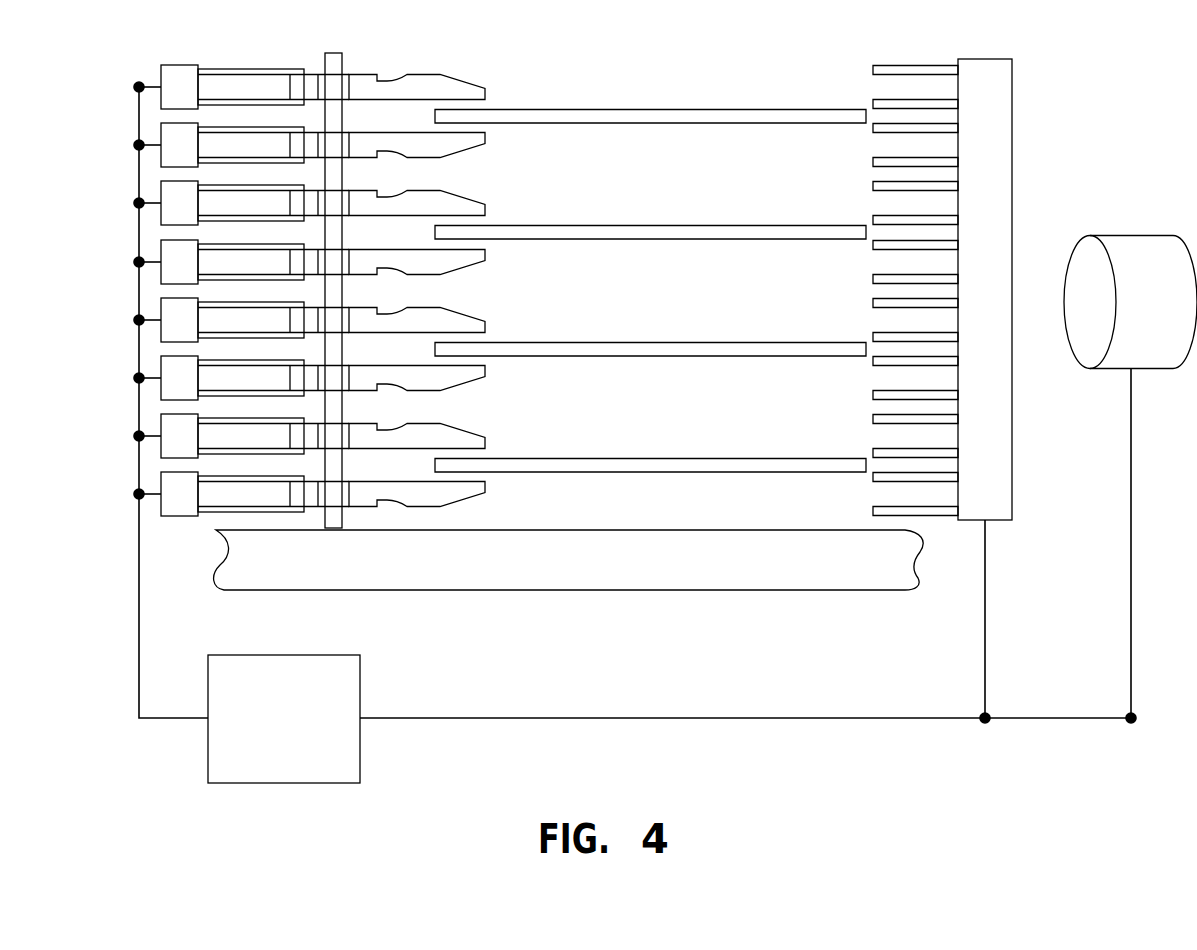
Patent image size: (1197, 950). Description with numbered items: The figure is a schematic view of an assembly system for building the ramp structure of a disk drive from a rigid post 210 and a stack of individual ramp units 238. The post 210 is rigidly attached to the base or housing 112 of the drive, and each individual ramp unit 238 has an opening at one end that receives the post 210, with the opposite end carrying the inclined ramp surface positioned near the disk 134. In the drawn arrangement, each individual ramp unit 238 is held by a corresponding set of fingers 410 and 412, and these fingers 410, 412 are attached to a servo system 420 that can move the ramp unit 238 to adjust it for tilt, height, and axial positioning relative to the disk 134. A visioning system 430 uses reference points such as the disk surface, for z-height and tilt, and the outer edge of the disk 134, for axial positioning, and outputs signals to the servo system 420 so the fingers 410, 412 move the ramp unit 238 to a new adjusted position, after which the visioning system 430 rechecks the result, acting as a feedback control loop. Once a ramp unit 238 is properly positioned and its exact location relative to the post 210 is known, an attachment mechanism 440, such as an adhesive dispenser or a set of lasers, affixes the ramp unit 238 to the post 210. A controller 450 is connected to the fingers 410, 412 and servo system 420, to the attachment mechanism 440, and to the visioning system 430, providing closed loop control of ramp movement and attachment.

The housing 112 is at (809, 591).
The disk 134 is at (650, 108).
The post 210 is at (337, 55).
The individual ramp unit 238 is at (471, 93).
The fingers 410 is at (251, 67).
The fingers 412 is at (235, 97).
The servo system 420 is at (173, 72).
The visioning system 430 is at (1131, 235).
The attachment mechanism 440 is at (1013, 132).
The controller 450 is at (312, 654).